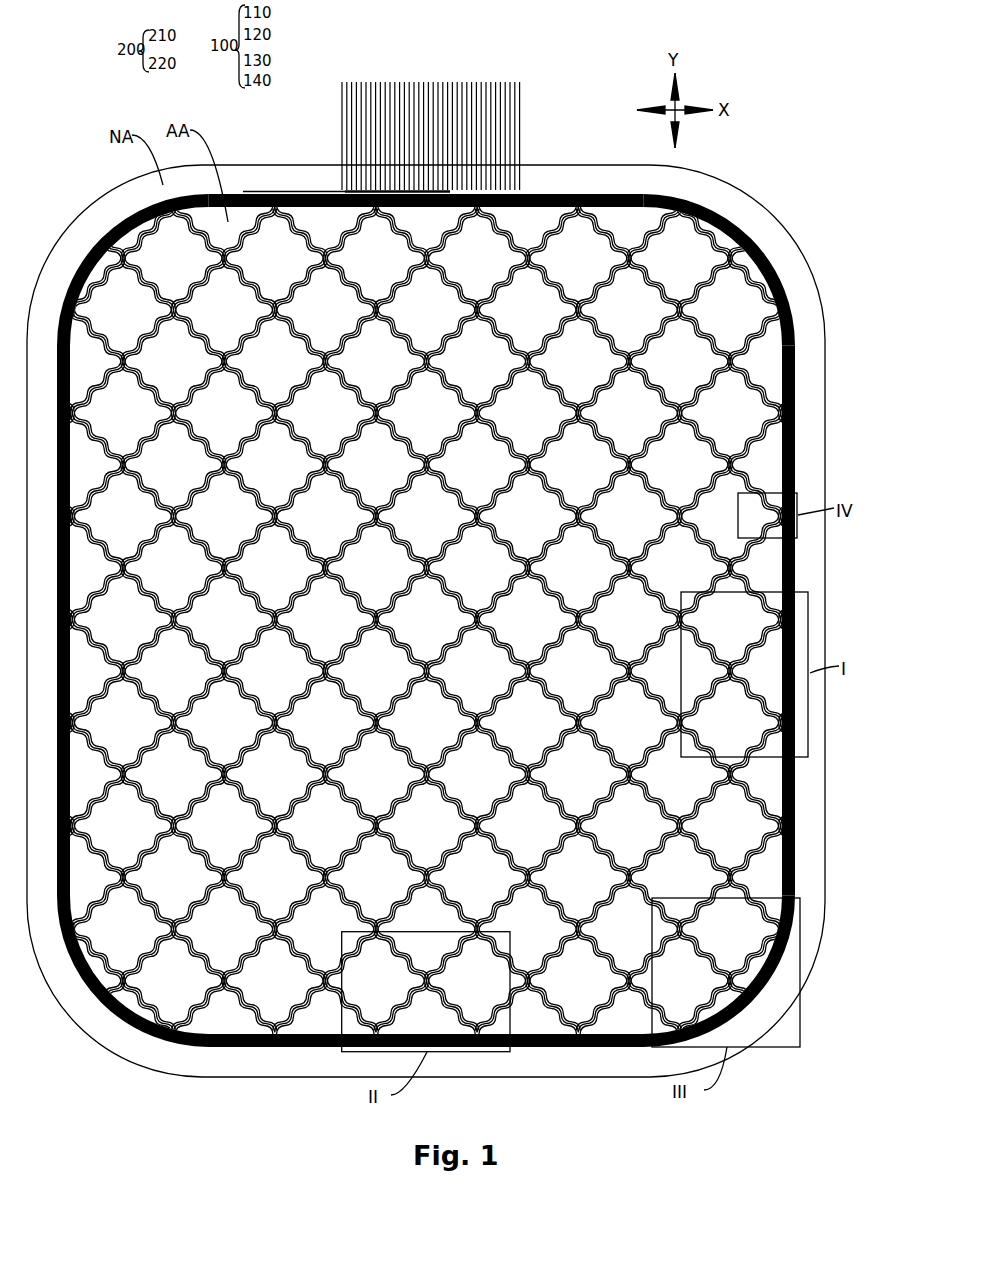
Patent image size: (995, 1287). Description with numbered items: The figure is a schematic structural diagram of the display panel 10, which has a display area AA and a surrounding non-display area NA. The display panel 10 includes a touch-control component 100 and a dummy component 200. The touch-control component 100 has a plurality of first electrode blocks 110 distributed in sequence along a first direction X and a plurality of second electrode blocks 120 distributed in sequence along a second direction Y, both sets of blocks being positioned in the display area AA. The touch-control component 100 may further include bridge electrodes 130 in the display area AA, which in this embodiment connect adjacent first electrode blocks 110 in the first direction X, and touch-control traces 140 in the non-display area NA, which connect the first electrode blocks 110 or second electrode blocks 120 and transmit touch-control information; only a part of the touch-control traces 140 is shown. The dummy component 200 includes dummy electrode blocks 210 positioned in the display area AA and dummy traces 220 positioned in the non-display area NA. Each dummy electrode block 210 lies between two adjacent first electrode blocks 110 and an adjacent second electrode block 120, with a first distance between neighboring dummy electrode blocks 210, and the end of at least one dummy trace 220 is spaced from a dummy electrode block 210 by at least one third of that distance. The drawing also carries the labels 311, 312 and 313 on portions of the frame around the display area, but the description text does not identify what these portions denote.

The display panel 10 is at (429, 34).
The touch-control component 100 is at (426, 620).
The first electrode blocks 110 is at (770, 355).
The second electrode blocks 120 is at (752, 305).
The bridge electrodes 130 is at (755, 248).
The touch-control traces 140 is at (318, 191).
The dummy component 200 is at (426, 621).
The dummy electrode blocks 210 is at (795, 408).
The dummy traces 220 is at (795, 442).
The first straight portion 311 is at (795, 645).
The second straight portion 312 is at (558, 194).
The corner portion 313 is at (735, 232).